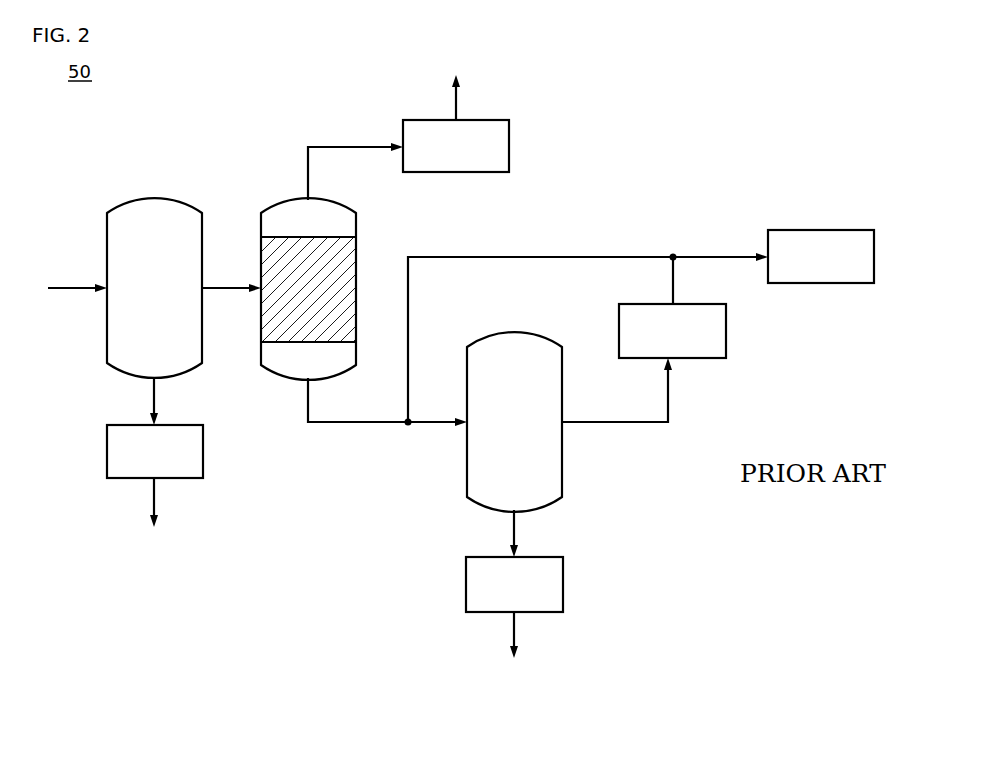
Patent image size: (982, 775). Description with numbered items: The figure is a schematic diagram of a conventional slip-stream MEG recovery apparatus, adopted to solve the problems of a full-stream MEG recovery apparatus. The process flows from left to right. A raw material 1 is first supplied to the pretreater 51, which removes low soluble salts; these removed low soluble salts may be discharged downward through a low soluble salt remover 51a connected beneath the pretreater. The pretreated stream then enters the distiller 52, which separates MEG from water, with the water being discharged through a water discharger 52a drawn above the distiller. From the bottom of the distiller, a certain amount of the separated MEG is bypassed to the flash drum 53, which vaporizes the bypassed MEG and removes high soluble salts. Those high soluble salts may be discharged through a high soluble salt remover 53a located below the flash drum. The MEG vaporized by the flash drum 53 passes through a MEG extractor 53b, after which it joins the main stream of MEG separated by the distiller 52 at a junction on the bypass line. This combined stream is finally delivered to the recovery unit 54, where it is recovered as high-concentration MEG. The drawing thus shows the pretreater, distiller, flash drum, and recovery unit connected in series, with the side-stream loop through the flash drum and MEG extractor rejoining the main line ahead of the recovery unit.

The raw material 1 is at (69, 288).
The pretreater 51 is at (155, 199).
The low soluble salt remover 51a is at (170, 425).
The distiller 52 is at (318, 201).
The water discharger 52a is at (476, 120).
The flash drum 53 is at (530, 331).
The high soluble salt remover 53a is at (533, 557).
The MEG extractor 53b is at (690, 304).
The recovery unit 54 is at (822, 230).